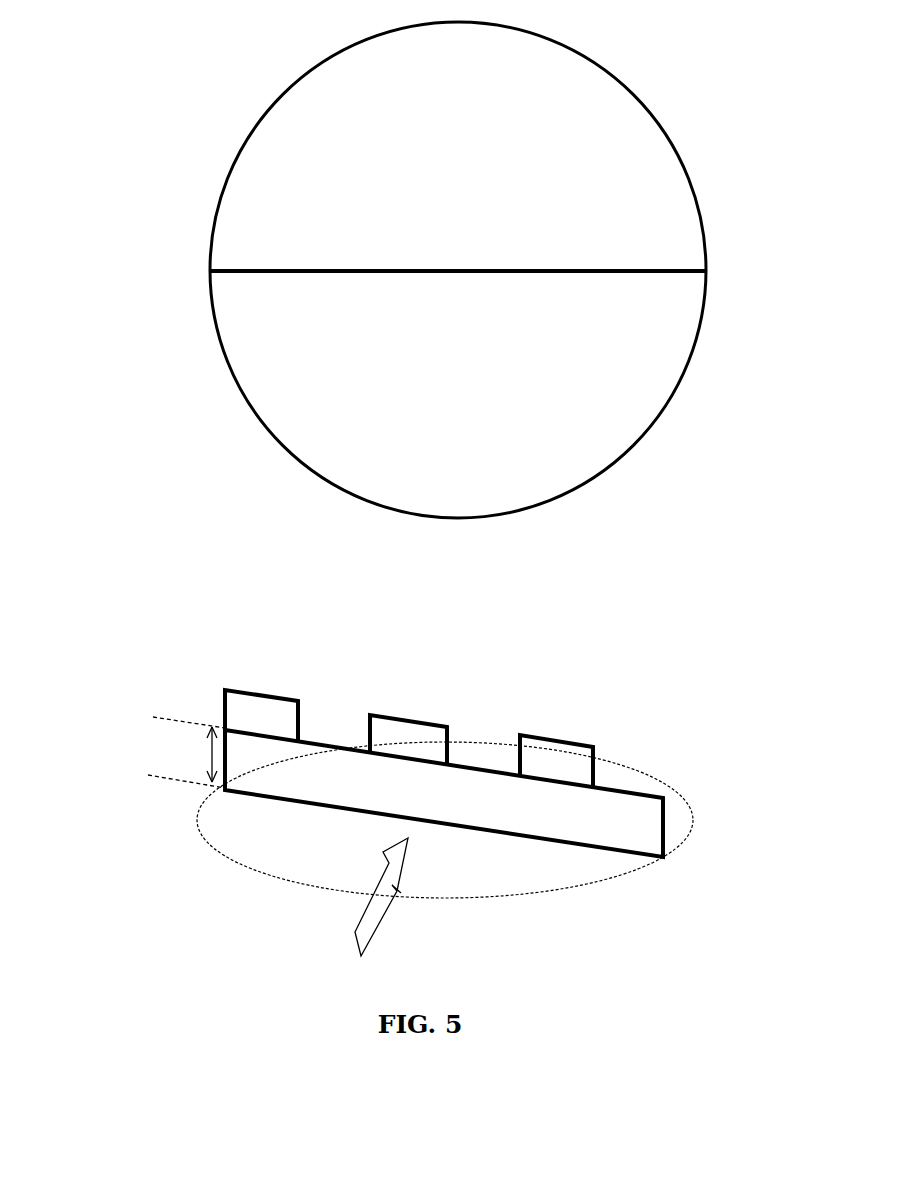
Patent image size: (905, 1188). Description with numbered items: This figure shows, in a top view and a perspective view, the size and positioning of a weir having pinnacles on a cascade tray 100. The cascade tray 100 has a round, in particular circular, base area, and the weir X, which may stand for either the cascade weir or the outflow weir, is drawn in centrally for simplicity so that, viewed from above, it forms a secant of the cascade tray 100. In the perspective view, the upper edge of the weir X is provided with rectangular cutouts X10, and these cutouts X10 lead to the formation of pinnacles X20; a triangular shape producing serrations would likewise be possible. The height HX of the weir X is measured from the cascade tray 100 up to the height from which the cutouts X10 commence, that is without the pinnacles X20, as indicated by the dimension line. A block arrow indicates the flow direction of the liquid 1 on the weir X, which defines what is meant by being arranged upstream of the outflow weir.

The cascade tray 100 is at (252, 403).
The weir X is at (460, 273).
The cutouts X10 is at (337, 737).
The pinnacles X20 is at (560, 737).
The height of the weir HX is at (186, 752).
The liquid 1 is at (377, 920).